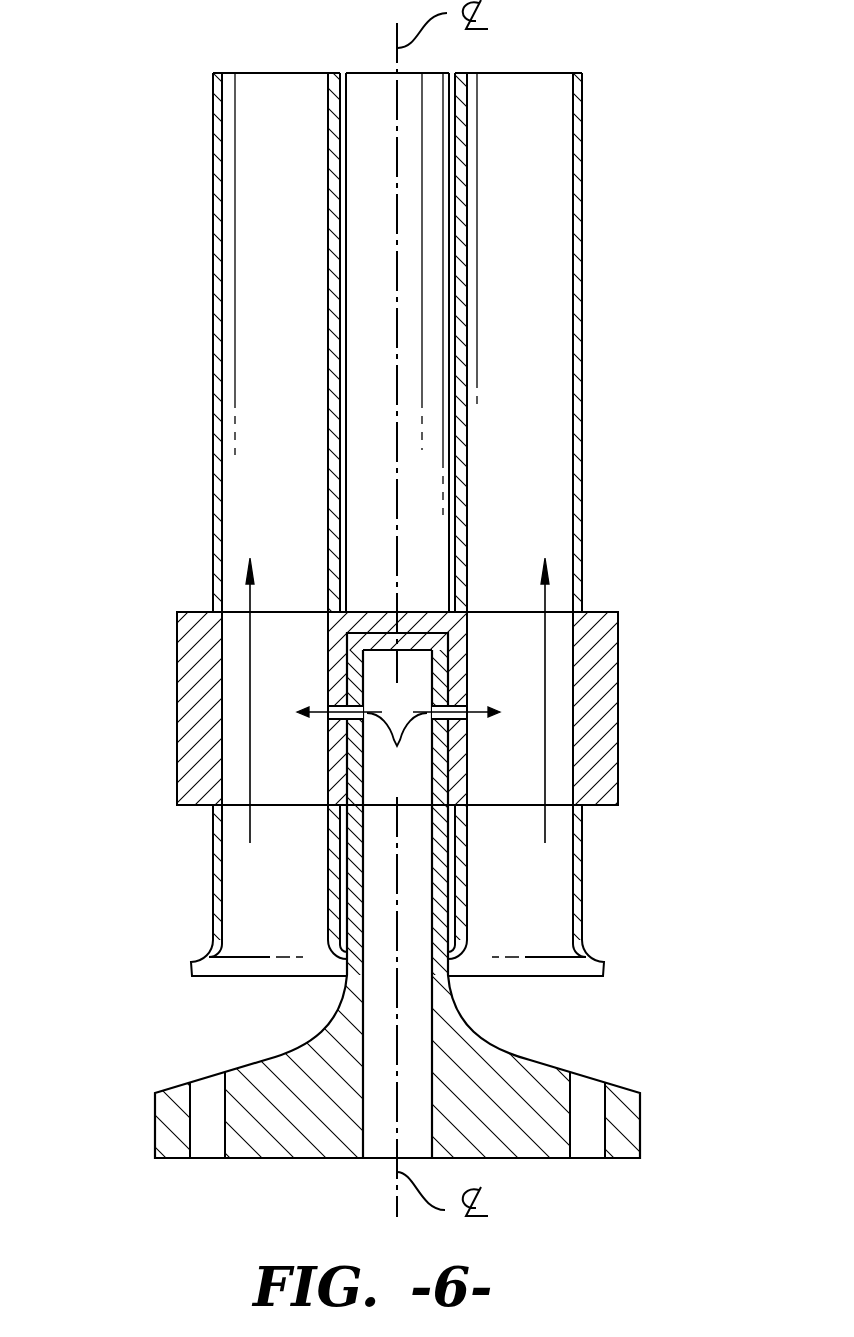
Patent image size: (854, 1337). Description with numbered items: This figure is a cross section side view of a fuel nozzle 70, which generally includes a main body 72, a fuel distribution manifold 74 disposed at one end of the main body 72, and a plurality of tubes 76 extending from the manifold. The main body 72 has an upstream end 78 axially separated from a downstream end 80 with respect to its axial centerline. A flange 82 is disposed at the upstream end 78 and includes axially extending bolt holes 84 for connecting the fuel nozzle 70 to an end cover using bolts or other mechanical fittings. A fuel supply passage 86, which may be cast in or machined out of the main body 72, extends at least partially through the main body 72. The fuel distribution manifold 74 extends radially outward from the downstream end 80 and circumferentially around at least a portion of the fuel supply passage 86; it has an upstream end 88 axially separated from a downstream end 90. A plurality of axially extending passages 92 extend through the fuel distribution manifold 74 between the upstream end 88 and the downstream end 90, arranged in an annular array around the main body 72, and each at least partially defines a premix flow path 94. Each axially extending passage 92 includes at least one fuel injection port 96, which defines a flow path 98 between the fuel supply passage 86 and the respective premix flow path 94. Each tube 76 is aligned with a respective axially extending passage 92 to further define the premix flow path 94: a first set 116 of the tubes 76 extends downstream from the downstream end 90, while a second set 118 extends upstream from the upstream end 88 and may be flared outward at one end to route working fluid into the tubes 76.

The fuel nozzle 70 is at (150, 108).
The main body 72 is at (449, 1002).
The fuel distribution manifold 74 is at (618, 702).
The tubes 76 is at (368, 97).
The upstream end 78 is at (515, 1160).
The downstream end 80 is at (427, 650).
The flange 82 is at (153, 1130).
The bolt holes 84 is at (207, 1143).
The fuel supply passage 86 is at (380, 1145).
The upstream end 88 is at (600, 805).
The downstream end 90 is at (617, 612).
The axially extending passages 92 is at (305, 666).
The premix flow path 94 is at (252, 818).
The fuel injection port 96 is at (337, 720).
The flow path 98 is at (397, 904).
The first set of tubes 116 is at (195, 407).
The second set of tubes 118 is at (195, 886).